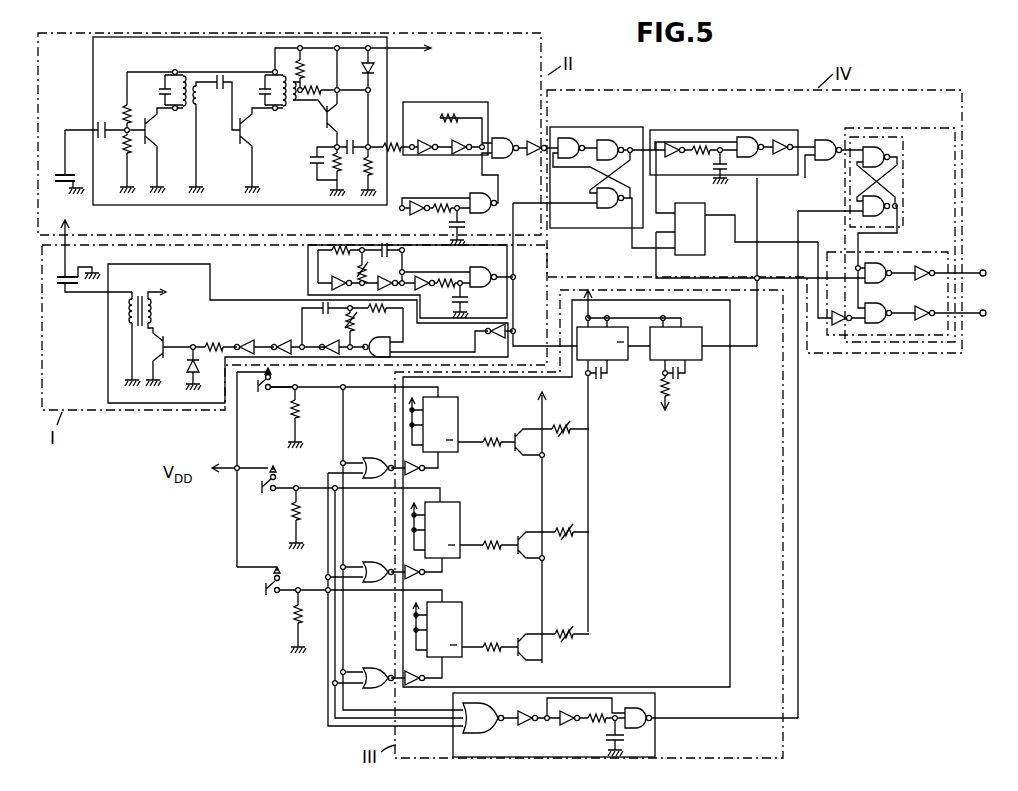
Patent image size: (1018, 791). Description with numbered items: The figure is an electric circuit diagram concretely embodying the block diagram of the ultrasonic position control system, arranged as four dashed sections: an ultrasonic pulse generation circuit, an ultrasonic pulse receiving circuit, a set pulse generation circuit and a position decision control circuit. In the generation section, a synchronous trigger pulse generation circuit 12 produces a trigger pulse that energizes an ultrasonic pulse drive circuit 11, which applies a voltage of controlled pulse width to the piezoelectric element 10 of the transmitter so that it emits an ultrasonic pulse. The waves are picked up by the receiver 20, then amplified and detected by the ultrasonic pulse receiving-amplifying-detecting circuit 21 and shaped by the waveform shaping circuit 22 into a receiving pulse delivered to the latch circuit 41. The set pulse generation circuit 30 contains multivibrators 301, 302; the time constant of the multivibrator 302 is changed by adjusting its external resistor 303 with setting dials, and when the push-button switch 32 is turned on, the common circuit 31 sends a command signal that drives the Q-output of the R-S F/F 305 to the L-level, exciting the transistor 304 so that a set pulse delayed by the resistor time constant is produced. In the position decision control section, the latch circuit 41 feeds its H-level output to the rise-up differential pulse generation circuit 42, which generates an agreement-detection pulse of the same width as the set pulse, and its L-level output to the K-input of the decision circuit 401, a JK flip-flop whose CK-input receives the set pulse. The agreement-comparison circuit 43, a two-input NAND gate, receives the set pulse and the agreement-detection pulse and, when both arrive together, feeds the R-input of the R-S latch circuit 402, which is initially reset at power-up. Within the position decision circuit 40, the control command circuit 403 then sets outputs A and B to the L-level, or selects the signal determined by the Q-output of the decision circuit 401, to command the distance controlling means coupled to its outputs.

The piezoelectric element 10 is at (88, 294).
The ultrasonic pulse drive circuit 11 is at (212, 300).
The synchronous trigger pulse generation circuit 12 is at (509, 289).
The receiver 20 is at (61, 184).
The ultrasonic pulse receiving-amplifying-detecting circuit 21 is at (93, 50).
The waveform shaping circuit 22 is at (452, 102).
The set pulse generation circuit 30 is at (516, 485).
The common circuit 31 is at (655, 737).
The push-button switch 32 is at (262, 390).
The position decision circuit 40 is at (899, 221).
The latch circuit 41 is at (593, 128).
The rise-up differential pulse generation circuit 42 is at (740, 122).
The agreement-comparison circuit 43 is at (818, 137).
The multivibrator 301 is at (702, 368).
The multivibrator 302 is at (606, 378).
The external resistor 303 is at (562, 436).
The transistor 304 is at (516, 433).
The R-S F/F 305 is at (455, 396).
The decision circuit 401 is at (705, 249).
The R-S latch circuit 402 is at (905, 158).
The control command circuit 403 is at (900, 255).